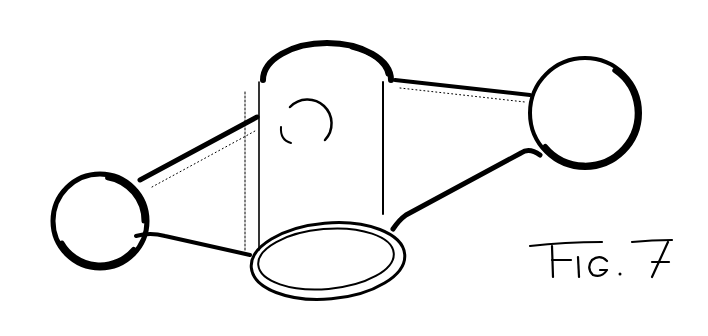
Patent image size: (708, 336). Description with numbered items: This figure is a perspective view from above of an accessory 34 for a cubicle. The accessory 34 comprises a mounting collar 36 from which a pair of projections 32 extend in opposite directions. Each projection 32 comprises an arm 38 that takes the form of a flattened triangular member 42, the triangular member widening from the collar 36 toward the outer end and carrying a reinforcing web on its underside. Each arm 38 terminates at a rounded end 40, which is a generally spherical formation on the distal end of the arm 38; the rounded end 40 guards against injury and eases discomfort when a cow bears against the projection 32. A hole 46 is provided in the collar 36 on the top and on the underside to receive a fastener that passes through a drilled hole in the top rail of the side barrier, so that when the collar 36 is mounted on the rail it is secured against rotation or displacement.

The accessory 34 is at (116, 87).
The mounting collar 36 is at (277, 89).
The hole 46 is at (300, 130).
The rounded end 40 is at (82, 192).
The projection 32 is at (155, 283).
The arm 38 is at (155, 178).
The flattened triangular member 42 is at (220, 167).